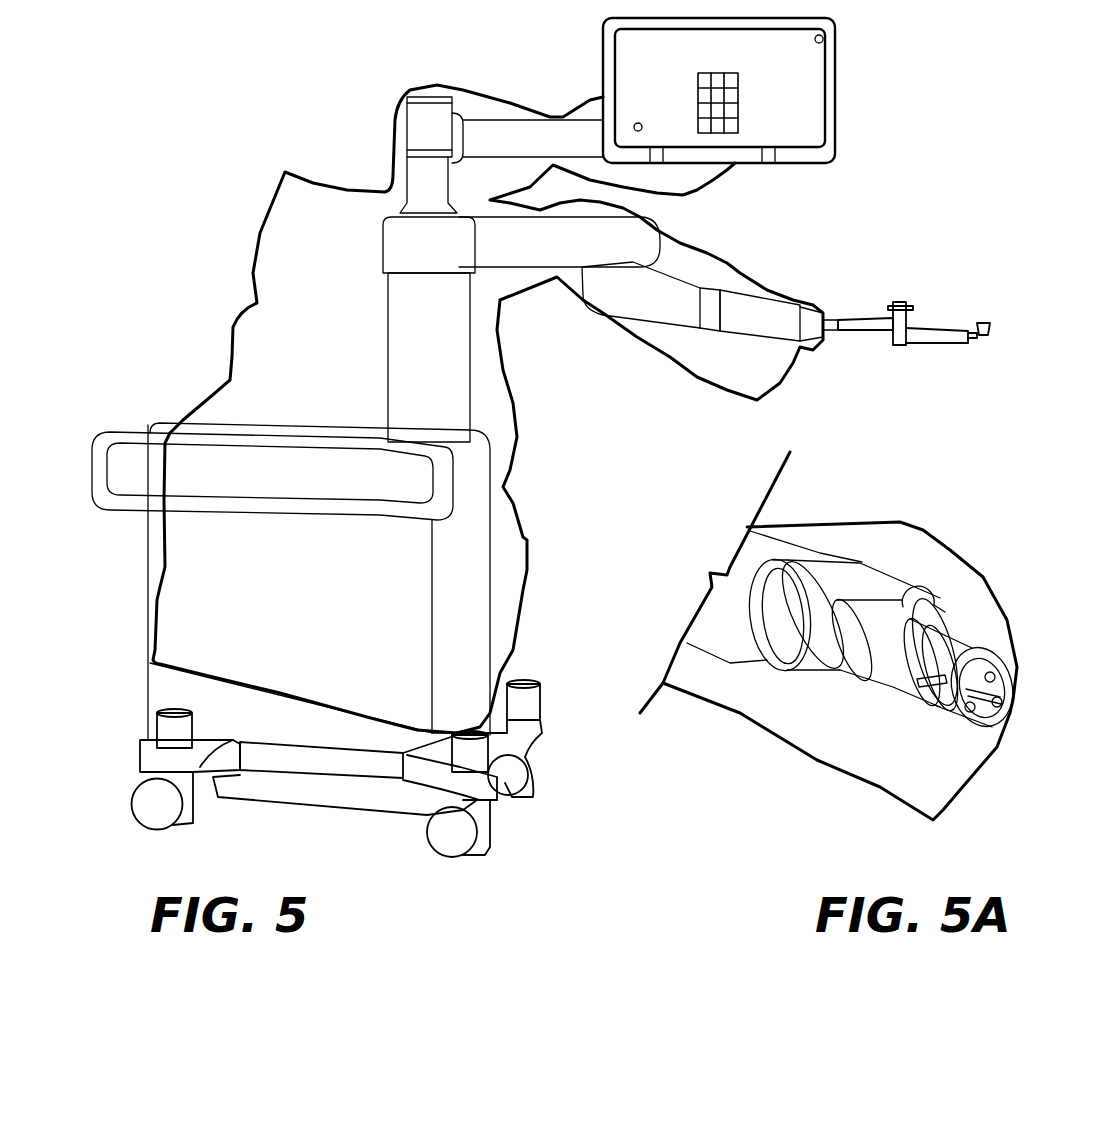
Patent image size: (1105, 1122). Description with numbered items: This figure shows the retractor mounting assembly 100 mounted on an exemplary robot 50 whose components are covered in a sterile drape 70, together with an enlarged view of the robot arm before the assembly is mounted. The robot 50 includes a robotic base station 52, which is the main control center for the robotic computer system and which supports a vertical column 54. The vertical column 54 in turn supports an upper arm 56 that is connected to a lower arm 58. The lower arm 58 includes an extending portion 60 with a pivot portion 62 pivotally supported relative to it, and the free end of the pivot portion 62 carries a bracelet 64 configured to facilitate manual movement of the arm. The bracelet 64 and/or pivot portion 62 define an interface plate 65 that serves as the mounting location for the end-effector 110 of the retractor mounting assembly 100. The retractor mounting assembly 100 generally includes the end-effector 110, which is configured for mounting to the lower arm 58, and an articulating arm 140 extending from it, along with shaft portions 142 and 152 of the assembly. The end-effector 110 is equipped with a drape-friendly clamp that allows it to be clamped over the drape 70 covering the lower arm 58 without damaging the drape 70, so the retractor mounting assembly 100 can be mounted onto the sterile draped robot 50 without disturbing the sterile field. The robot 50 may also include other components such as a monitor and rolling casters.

In FIG. 5, the robot 50 is at (203, 380).
In FIG. 5, the robotic base station 52 is at (178, 600).
In FIG. 5, the vertical column 54 is at (443, 363).
In FIG. 5, the upper arm 56 is at (545, 222).
In FIG. 5, the lower arm 58 is at (673, 281).
In FIG. 5A, the lower arm 58 is at (757, 553).
In FIG. 5, the extending portion 60 is at (760, 305).
In FIG. 5A, the extending portion 60 is at (857, 587).
In FIG. 5A, the pivot portion 62 is at (950, 608).
In FIG. 5A, the bracelet 64 is at (1010, 657).
In FIG. 5A, the interface plate 65 is at (983, 708).
In FIG. 5, the drape 70 is at (268, 248).
In FIG. 5A, the drape 70 is at (830, 750).
In FIG. 5, the retractor mounting assembly 100 is at (905, 336).
In FIG. 5, the end-effector 110 is at (818, 306).
In FIG. 5, the articulating arm 140 is at (897, 352).
In FIG. 5, the proximal shaft 142 is at (866, 332).
In FIG. 5, the distal shaft 152 is at (940, 345).